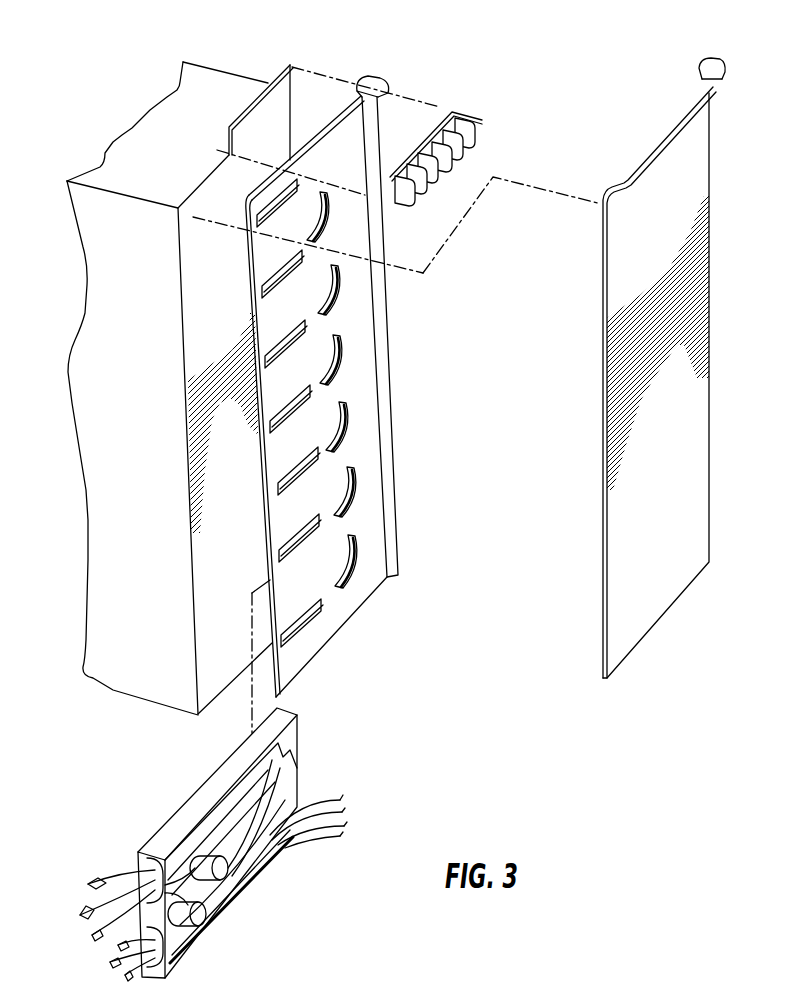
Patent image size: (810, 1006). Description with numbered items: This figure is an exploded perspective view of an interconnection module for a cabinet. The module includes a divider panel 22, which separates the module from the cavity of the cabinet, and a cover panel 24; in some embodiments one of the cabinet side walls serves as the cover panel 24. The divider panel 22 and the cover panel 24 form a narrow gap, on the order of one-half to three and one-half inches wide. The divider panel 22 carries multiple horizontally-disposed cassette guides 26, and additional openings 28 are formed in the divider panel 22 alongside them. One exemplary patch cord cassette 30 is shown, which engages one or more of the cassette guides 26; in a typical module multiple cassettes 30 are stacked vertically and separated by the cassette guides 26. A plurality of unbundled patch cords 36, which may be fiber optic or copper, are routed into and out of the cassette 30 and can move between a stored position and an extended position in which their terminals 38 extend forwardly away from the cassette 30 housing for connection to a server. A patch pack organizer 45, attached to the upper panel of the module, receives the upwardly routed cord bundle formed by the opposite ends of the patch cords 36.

The divider panel 22 is at (352, 120).
The cover panel 24 is at (693, 467).
The cassette guides 26 is at (300, 485).
The arcuate slots 28 is at (348, 540).
The patch cord cassette 30 is at (247, 877).
The patch cords 36 is at (327, 802).
The terminals 38 is at (63, 918).
The patch pack organizer 45 is at (476, 121).